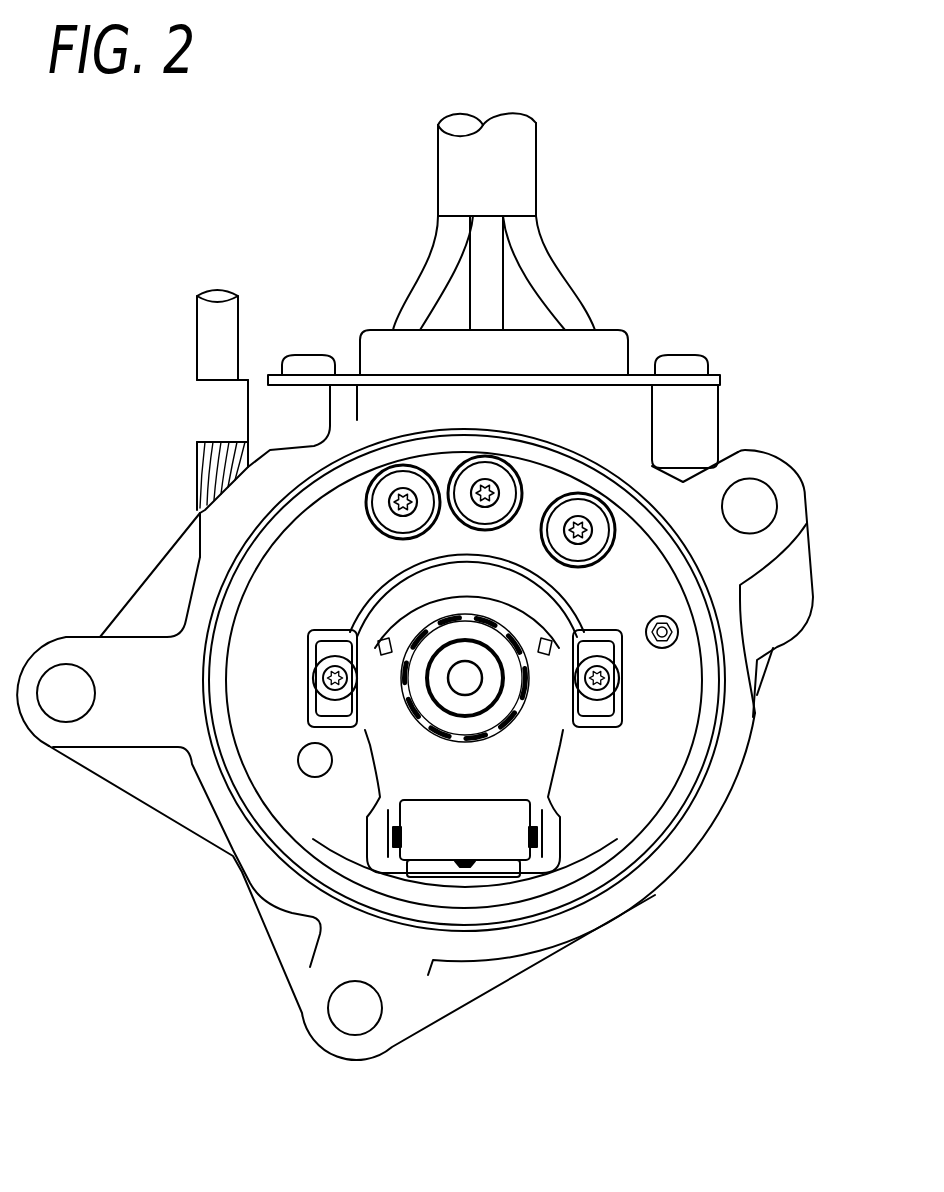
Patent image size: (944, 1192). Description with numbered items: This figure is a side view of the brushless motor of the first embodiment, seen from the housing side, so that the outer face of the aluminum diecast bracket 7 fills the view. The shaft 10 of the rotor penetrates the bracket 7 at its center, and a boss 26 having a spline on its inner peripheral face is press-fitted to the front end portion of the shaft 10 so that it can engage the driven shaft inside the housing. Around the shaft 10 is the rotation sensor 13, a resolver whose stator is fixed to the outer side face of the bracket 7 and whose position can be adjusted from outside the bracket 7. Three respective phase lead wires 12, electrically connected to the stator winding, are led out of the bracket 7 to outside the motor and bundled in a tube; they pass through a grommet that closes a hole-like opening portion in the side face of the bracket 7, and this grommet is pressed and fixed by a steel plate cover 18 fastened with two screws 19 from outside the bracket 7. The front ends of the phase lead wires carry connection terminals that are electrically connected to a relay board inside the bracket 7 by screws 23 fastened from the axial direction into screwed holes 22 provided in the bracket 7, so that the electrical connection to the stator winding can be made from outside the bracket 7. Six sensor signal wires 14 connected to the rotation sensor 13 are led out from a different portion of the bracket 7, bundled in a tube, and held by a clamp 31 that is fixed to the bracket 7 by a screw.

The bracket 7 is at (357, 420).
The shaft 10 is at (455, 688).
The respective phase lead wires 12 is at (450, 238).
The rotation sensor 13 is at (493, 712).
The sensor signal wires 14 is at (223, 468).
The cover 18 is at (614, 333).
The screws 19 is at (305, 360).
The screwed holes 22 is at (420, 515).
The screws 23 is at (412, 482).
The boss 26 is at (523, 768).
The clamp 31 is at (196, 405).